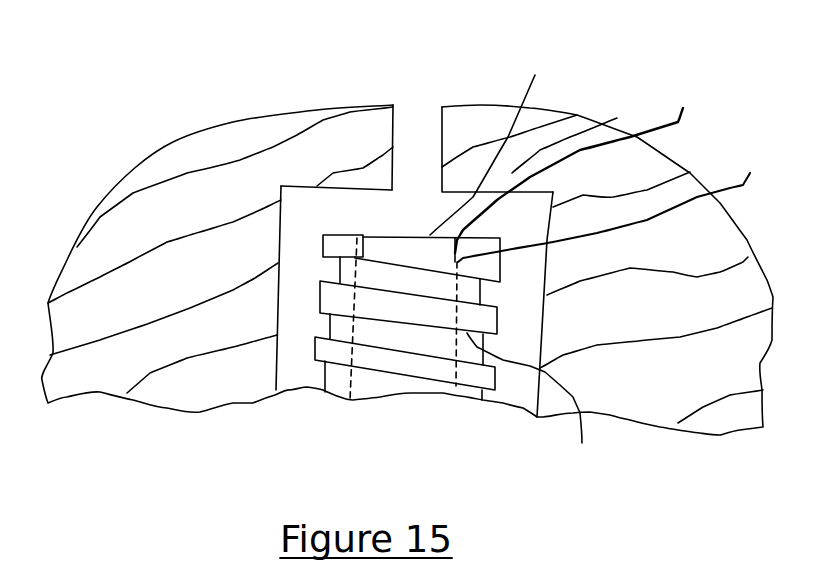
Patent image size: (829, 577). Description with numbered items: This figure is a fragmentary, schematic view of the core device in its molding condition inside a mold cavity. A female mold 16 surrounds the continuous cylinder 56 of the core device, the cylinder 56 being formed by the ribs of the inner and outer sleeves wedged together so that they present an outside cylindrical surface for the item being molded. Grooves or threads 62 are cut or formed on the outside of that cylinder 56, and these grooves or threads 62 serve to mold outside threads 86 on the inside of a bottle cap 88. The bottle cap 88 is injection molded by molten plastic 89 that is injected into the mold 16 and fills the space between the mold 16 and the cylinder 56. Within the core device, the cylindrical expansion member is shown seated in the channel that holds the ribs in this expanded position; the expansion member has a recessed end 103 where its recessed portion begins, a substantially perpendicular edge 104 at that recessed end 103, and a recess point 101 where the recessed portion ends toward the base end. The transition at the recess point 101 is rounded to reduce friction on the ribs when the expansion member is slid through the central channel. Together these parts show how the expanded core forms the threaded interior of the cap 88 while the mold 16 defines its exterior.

The female mold 16 is at (212, 143).
The bottle cap 88 is at (298, 207).
The molten plastic 89 is at (421, 118).
The continuous cylinder 56 is at (398, 413).
The outside threads 86 is at (320, 320).
The recessed end 103 is at (496, 137).
The substantially perpendicular edge 104 is at (597, 171).
The recess point 101 is at (629, 206).
The grooves or threads 62 is at (533, 406).